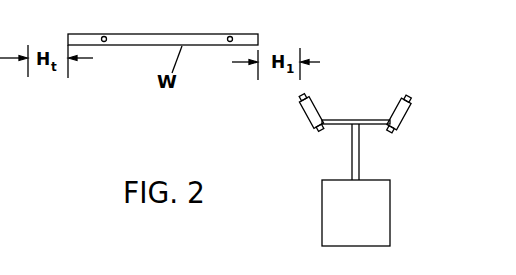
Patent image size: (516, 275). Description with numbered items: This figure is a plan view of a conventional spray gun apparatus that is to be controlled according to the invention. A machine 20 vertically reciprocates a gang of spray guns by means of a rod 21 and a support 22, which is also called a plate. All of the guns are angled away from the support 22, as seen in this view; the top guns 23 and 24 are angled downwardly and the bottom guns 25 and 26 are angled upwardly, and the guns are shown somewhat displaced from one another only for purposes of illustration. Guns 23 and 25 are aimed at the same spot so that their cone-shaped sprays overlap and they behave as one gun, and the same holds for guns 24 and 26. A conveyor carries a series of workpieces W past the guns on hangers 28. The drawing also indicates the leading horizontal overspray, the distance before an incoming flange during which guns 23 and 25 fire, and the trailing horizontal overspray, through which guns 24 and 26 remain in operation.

The machine 20 is at (317, 197).
The rod 21 is at (360, 168).
The support 22 is at (342, 125).
The top gun 23 is at (303, 118).
The top gun 24 is at (402, 132).
The bottom gun 25 is at (323, 111).
The bottom gun 26 is at (399, 103).
The hangers 28 is at (106, 37).